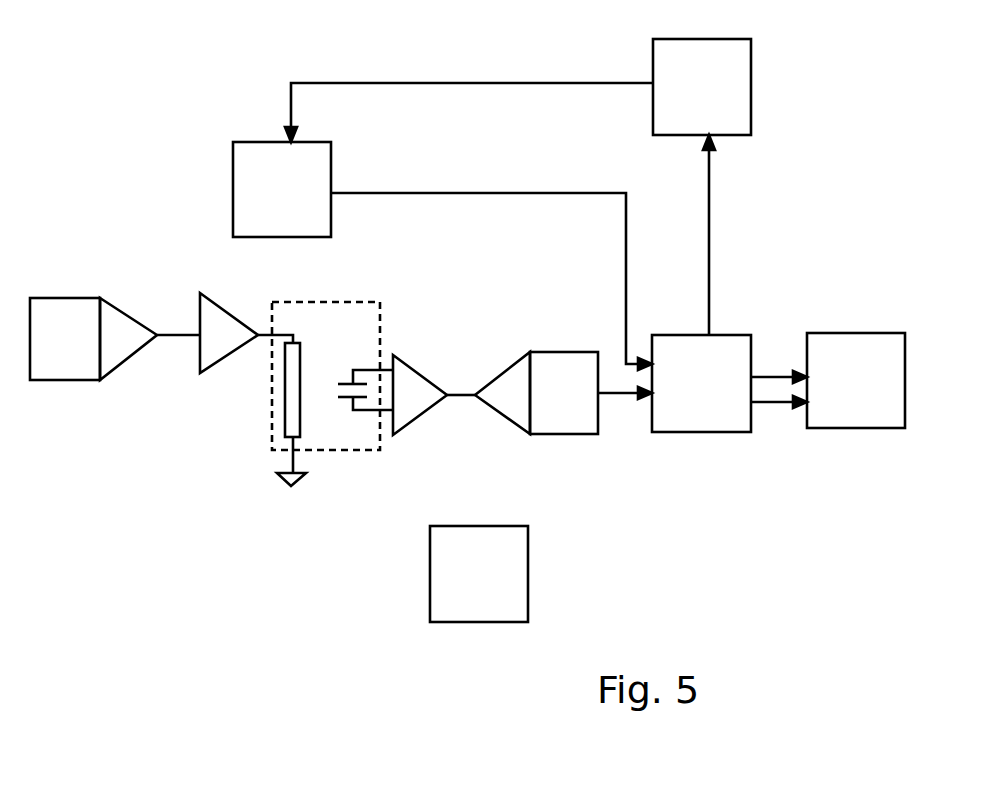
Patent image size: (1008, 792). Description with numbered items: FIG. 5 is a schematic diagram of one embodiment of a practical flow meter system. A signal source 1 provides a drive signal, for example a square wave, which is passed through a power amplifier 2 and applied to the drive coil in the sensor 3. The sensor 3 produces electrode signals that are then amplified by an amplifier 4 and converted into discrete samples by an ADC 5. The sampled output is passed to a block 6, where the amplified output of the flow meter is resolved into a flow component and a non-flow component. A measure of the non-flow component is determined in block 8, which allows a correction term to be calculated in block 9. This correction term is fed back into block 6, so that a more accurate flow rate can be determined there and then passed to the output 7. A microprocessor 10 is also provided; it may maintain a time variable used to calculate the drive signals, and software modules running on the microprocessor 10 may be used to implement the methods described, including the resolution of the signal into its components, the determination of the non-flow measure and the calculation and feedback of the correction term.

The signal source 1 is at (93, 339).
The power amplifier 2 is at (229, 333).
The sensor 3 is at (326, 394).
The amplifier 4 is at (420, 395).
The ADC 5 is at (536, 393).
The flow and non-flow component resolver 6 is at (701, 383).
The output 7 is at (856, 380).
The non-flow component measurer 8 is at (702, 87).
The correction term calculator 9 is at (282, 189).
The microprocessor 10 is at (479, 574).